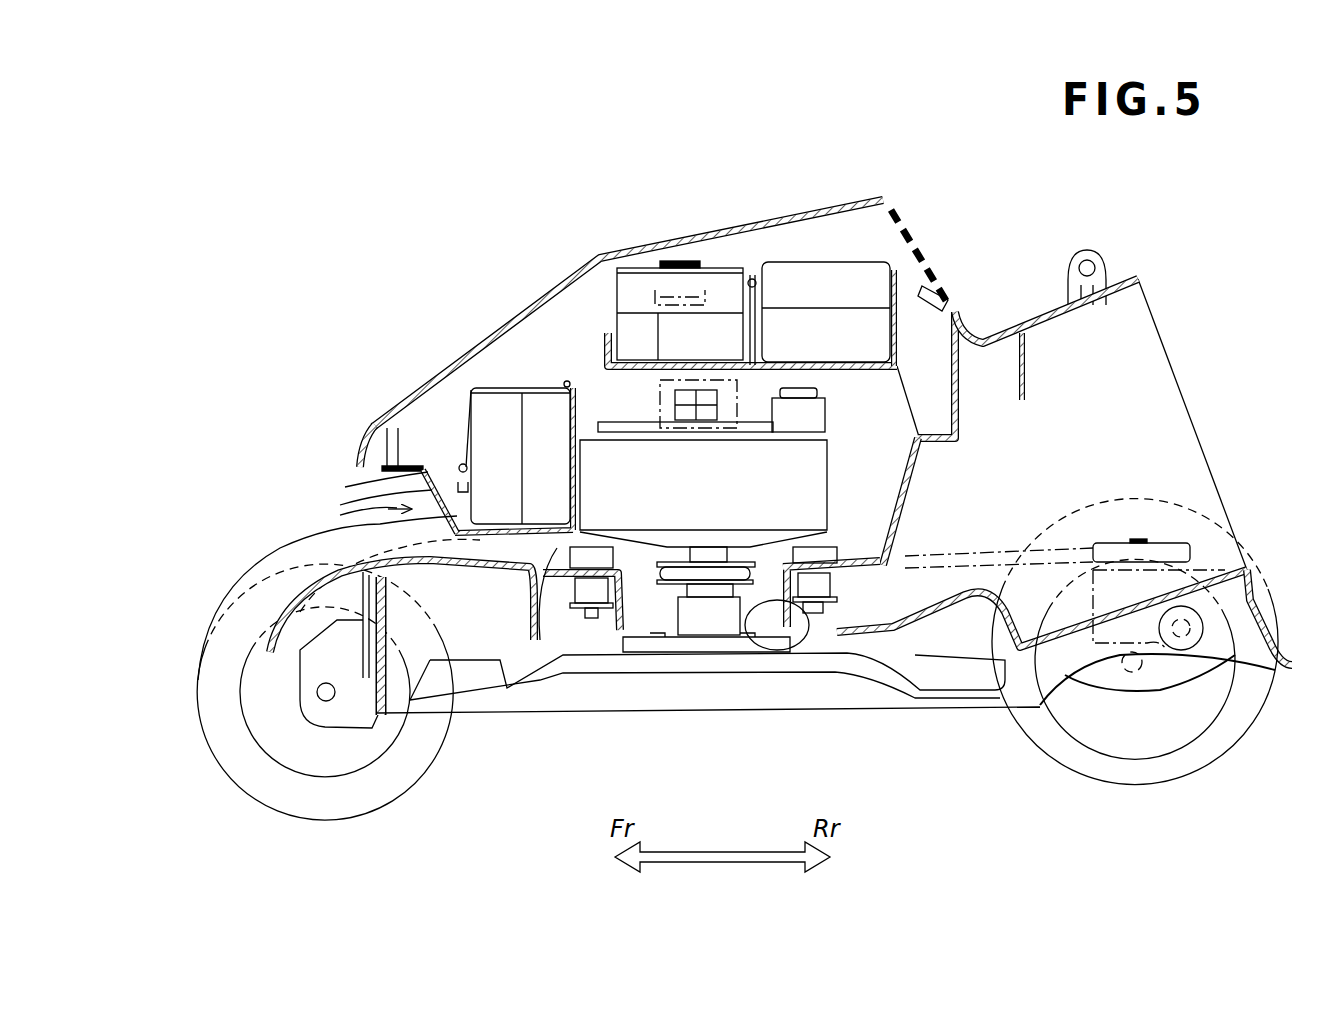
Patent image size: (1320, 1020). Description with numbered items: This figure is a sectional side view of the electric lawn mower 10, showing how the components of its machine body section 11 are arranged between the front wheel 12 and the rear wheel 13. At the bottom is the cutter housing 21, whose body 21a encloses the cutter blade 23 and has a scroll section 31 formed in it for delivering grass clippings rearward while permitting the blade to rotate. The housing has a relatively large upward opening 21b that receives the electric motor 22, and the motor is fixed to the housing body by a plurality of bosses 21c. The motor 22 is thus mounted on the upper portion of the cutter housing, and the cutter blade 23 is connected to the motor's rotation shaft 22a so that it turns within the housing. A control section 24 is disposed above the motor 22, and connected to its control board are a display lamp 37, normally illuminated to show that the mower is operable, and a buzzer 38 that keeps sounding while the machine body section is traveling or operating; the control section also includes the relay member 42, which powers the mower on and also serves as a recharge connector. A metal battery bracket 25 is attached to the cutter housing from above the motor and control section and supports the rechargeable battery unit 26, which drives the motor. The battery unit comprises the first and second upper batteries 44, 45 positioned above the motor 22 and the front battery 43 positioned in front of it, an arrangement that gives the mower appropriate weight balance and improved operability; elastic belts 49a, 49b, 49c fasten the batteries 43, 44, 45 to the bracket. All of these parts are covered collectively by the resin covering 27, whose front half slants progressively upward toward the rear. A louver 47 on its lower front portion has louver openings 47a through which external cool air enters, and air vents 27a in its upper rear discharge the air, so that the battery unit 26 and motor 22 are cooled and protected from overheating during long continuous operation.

The electric lawn mower 10 is at (330, 118).
The machine body section 11 is at (420, 298).
The front wheel 12 is at (268, 585).
The rear wheel 13 is at (1195, 537).
The cutter housing 21 is at (565, 735).
The body of the cutter housing 21a is at (320, 540).
The upward opening 21b is at (800, 612).
The bosses 21c is at (537, 648).
The electric motor 22 is at (830, 445).
The rotation shaft 22a is at (663, 553).
The cutter blade 23 is at (810, 673).
The control section 24 is at (622, 420).
The battery bracket 25 is at (883, 397).
The battery unit 26 is at (786, 131).
The covering 27 is at (433, 388).
The air vents 27a is at (936, 264).
The scroll section 31 is at (907, 500).
The display lamp 37 is at (935, 283).
The buzzer 38 is at (800, 394).
The relay member 42 is at (750, 396).
The front battery 43 is at (530, 385).
The first upper battery 44 is at (643, 266).
The second upper battery 45 is at (780, 262).
The louver 47 is at (400, 508).
The louver openings 47a is at (395, 490).
The elastic belt 49a is at (545, 407).
The elastic belt 49b is at (640, 282).
The elastic belt 49c is at (787, 282).